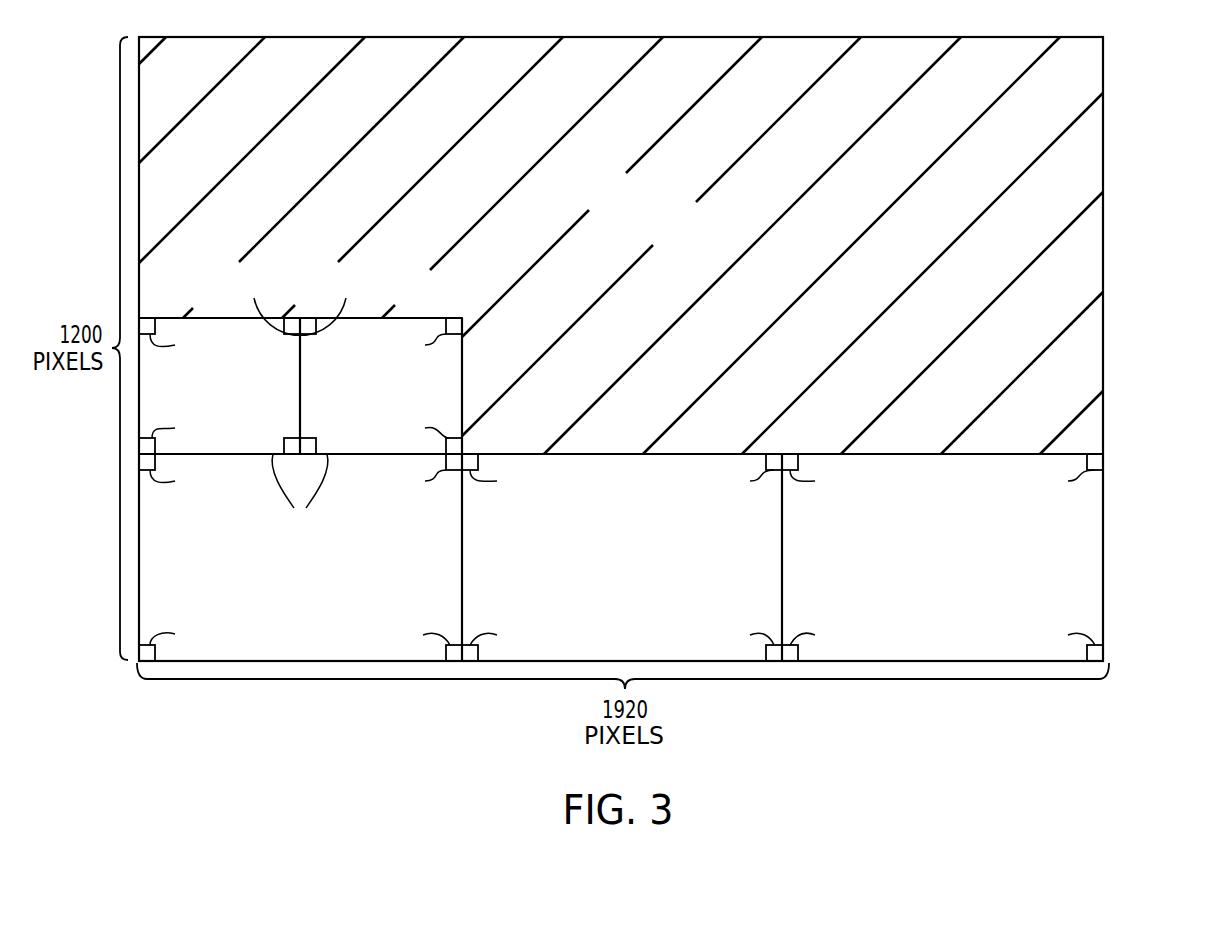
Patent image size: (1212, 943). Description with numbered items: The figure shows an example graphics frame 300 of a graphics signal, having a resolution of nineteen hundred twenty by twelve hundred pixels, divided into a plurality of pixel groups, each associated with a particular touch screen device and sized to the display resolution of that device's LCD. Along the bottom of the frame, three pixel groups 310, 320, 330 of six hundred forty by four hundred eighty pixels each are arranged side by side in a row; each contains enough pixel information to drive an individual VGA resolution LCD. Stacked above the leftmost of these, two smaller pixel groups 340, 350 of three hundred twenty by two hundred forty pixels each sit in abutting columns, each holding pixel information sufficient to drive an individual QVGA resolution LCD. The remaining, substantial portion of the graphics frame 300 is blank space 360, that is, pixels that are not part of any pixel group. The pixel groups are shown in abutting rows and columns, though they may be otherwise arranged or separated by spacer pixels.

The graphics frame 300 is at (1134, 60).
The pixel group 310 is at (284, 570).
The pixel group 320 is at (607, 570).
The pixel group 330 is at (915, 570).
The pixel group 340 is at (197, 404).
The pixel group 350 is at (360, 404).
The blank space 360 is at (618, 225).